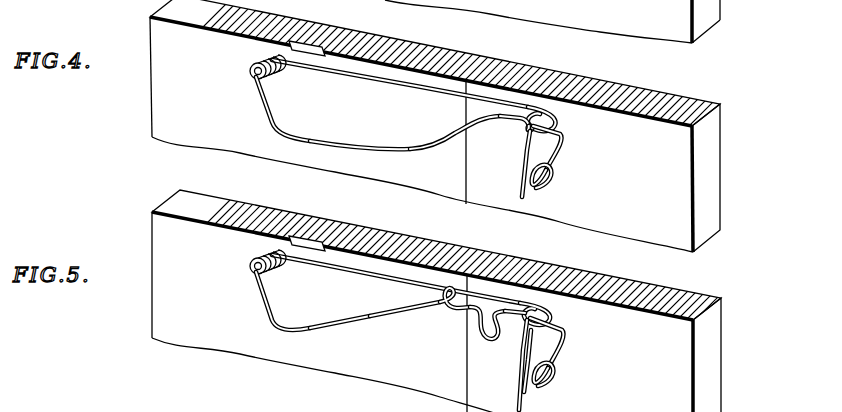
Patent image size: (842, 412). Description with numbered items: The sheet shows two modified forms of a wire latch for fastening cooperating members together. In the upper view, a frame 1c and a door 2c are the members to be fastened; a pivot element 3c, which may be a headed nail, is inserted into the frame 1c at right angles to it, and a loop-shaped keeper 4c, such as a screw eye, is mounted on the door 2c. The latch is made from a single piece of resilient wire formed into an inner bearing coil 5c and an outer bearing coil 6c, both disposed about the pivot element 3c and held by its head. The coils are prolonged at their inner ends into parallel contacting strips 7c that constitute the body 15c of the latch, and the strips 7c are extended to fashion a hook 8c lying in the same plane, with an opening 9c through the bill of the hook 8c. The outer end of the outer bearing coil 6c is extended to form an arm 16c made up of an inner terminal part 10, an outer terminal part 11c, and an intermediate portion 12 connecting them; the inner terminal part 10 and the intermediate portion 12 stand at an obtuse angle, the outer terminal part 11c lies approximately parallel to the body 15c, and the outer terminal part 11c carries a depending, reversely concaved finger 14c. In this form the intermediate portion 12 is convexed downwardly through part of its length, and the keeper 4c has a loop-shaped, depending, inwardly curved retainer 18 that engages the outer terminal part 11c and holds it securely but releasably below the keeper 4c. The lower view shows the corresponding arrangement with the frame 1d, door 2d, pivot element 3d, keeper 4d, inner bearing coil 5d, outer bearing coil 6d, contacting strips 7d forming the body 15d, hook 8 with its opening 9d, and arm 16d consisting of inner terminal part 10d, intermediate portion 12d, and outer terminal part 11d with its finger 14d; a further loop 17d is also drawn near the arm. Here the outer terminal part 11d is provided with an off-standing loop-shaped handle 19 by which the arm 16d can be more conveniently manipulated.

In FIG. 4, the frame 1c is at (150, 44).
In FIG. 4, the door 2c is at (716, 180).
In FIG. 4, the pivot element 3c is at (259, 78).
In FIG. 4, the keeper 4c is at (565, 118).
In FIG. 4, the inner bearing coil 5c is at (298, 48).
In FIG. 4, the outer bearing coil 6c is at (254, 74).
In FIG. 4, the contacting strips 7c is at (369, 70).
In FIG. 4, the hook 8c is at (521, 167).
In FIG. 4, the opening 9c is at (534, 195).
In FIG. 4, the inner terminal part 10 is at (266, 110).
In FIG. 4, the outer terminal part 11c is at (516, 118).
In FIG. 4, the intermediate portion 12 is at (402, 146).
In FIG. 4, the finger 14c is at (560, 150).
In FIG. 4, the body 15c is at (440, 70).
In FIG. 4, the arm 16c is at (359, 143).
In FIG. 4, the retainer 18 is at (527, 143).
In FIG. 5, the frame 1d is at (160, 250).
In FIG. 5, the door 2d is at (716, 384).
In FIG. 5, the pivot element 3d is at (259, 280).
In FIG. 5, the keeper 4d is at (565, 315).
In FIG. 5, the inner bearing coil 5d is at (292, 254).
In FIG. 5, the outer bearing coil 6d is at (255, 277).
In FIG. 5, the contacting strips 7d is at (368, 266).
In FIG. 5, the hook 8 is at (524, 353).
In FIG. 5, the opening 9d is at (538, 386).
In FIG. 5, the inner terminal part 10d is at (268, 318).
In FIG. 5, the outer terminal part 11d is at (562, 332).
In FIG. 5, the intermediate portion 12d is at (387, 312).
In FIG. 5, the finger 14d is at (518, 388).
In FIG. 5, the body 15d is at (418, 266).
In FIG. 5, the arm 16d is at (328, 322).
In FIG. 5, the loop 17d is at (457, 316).
In FIG. 5, the handle 19 is at (487, 338).